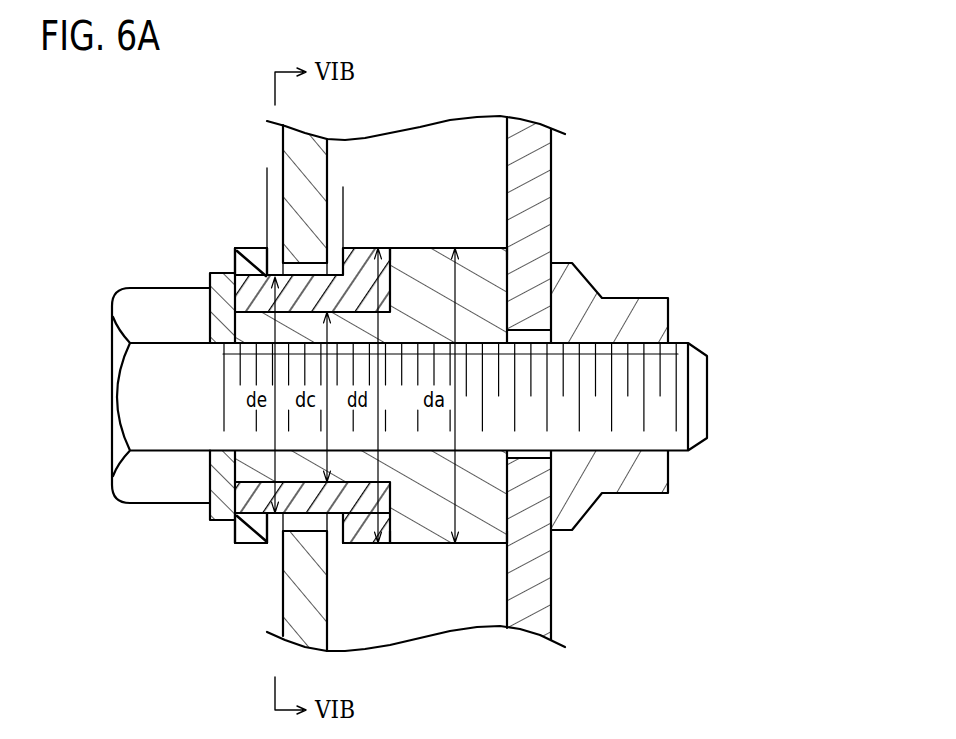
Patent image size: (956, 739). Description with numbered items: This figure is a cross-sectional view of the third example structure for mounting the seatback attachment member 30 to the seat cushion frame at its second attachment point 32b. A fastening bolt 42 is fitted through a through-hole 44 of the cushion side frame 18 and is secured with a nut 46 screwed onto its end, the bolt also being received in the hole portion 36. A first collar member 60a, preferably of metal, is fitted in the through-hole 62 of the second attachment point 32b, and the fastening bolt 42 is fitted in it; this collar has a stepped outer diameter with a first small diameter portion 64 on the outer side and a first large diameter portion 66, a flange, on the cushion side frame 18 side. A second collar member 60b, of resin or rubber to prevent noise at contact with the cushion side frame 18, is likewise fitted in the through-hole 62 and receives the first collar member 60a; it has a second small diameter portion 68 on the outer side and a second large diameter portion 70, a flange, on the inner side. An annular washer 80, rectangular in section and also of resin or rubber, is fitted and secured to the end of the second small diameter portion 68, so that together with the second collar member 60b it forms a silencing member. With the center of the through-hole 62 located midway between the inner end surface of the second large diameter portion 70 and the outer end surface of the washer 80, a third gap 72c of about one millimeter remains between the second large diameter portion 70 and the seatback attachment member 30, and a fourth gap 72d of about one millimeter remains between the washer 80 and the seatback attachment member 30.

The cushion side frame 18 is at (538, 190).
The seatback attachment member 30 is at (272, 153).
The second attachment point 32b is at (306, 533).
The hole portion 36 is at (397, 450).
The fastening bolt 42 is at (113, 376).
The through-hole 44 is at (541, 447).
The nut 46 is at (617, 310).
The first collar member 60a is at (470, 236).
The second collar member 60b is at (386, 557).
The through-hole 62 is at (300, 283).
The first small diameter portion 64 is at (352, 290).
The first large diameter portion 66 is at (432, 246).
The second small diameter portion 68 is at (247, 498).
The second large diameter portion 70 is at (358, 546).
The third gap 72c is at (298, 195).
The fourth gap 72d is at (293, 182).
The washer 80 is at (252, 255).